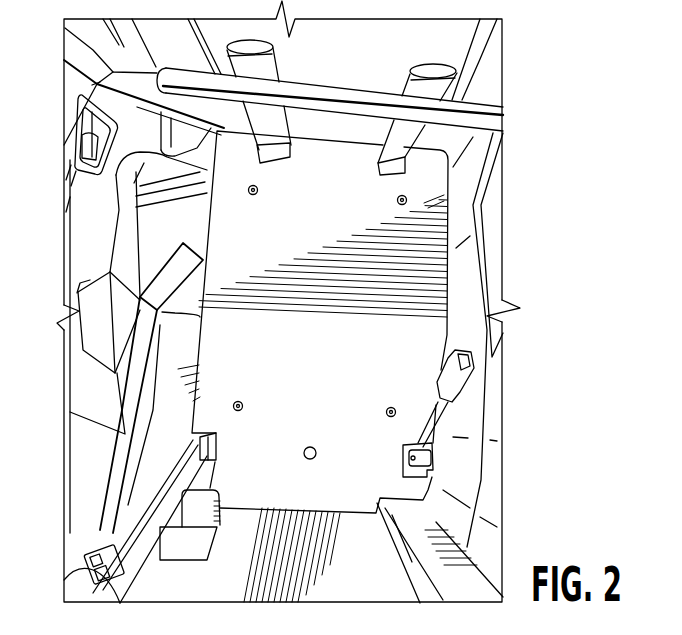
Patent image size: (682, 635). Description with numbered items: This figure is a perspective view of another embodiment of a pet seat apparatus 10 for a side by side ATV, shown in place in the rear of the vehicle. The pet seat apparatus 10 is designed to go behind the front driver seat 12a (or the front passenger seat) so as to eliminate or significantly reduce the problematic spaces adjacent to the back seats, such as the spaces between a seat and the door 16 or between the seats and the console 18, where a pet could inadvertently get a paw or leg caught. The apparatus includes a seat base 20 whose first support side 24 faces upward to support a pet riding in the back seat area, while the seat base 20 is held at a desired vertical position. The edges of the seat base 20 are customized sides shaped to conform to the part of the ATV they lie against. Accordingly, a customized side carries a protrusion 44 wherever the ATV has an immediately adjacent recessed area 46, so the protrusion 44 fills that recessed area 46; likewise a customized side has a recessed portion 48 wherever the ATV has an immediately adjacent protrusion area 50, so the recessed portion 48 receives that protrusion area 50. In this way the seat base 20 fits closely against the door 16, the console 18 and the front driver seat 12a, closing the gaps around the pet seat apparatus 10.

The pet seat apparatus 10 is at (533, 155).
The front driver seat 12a is at (437, 40).
The door 16 is at (113, 217).
The console 18 is at (470, 273).
The seat base 20 is at (423, 357).
The first support side 24 is at (321, 233).
The protrusion 44 is at (338, 513).
The recessed area 46 is at (374, 574).
The recessed portion 48 is at (208, 410).
The protrusion area 50 is at (194, 453).